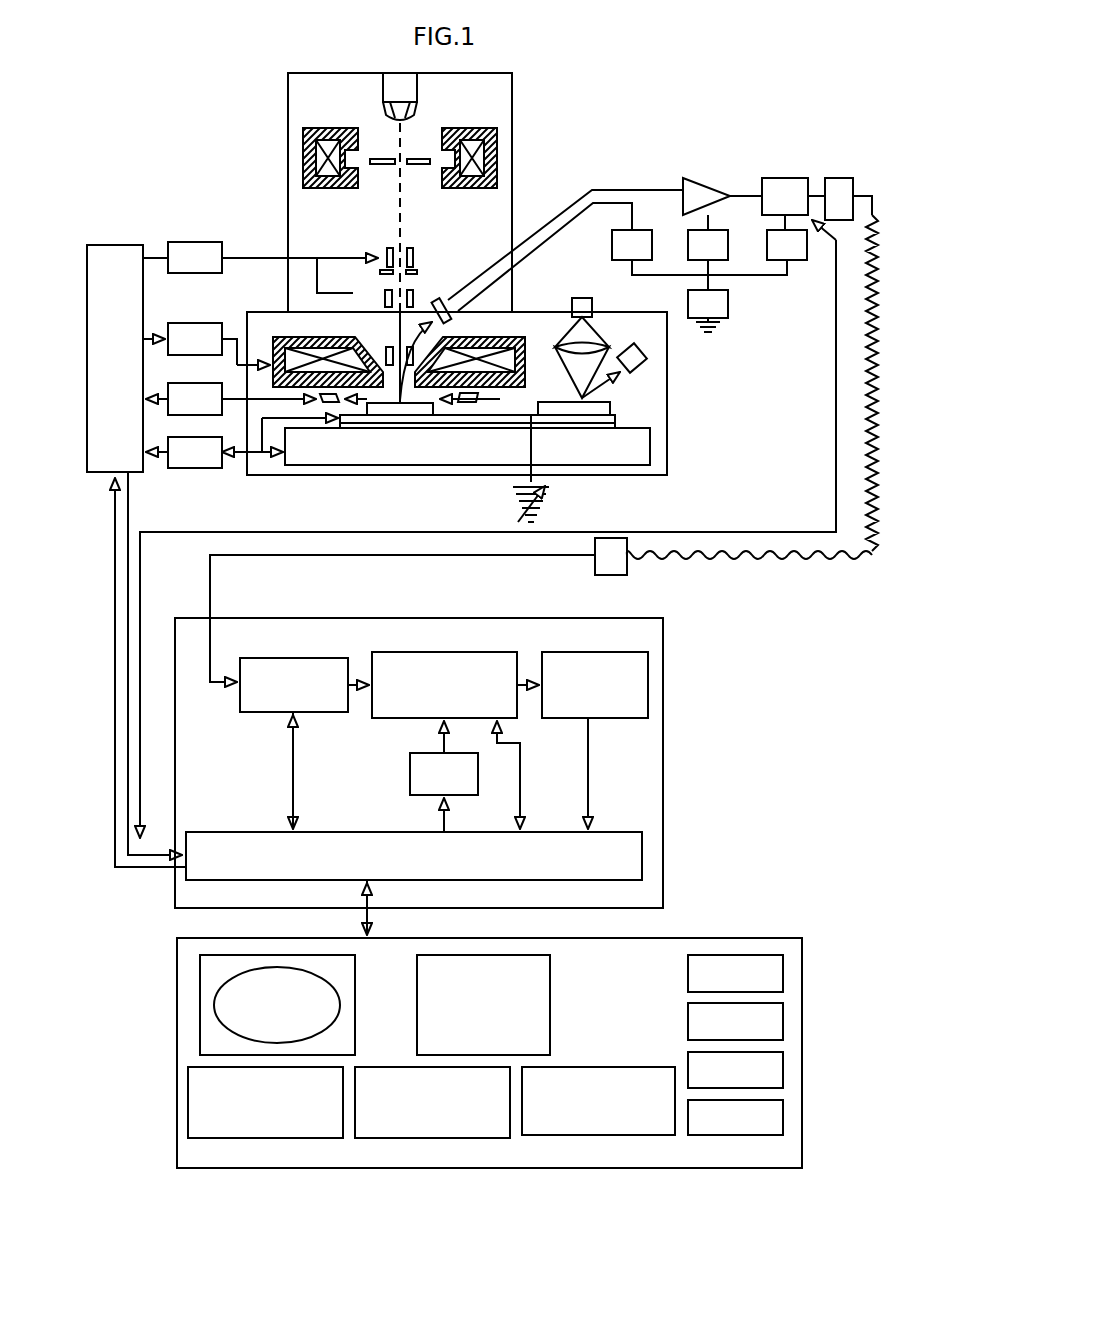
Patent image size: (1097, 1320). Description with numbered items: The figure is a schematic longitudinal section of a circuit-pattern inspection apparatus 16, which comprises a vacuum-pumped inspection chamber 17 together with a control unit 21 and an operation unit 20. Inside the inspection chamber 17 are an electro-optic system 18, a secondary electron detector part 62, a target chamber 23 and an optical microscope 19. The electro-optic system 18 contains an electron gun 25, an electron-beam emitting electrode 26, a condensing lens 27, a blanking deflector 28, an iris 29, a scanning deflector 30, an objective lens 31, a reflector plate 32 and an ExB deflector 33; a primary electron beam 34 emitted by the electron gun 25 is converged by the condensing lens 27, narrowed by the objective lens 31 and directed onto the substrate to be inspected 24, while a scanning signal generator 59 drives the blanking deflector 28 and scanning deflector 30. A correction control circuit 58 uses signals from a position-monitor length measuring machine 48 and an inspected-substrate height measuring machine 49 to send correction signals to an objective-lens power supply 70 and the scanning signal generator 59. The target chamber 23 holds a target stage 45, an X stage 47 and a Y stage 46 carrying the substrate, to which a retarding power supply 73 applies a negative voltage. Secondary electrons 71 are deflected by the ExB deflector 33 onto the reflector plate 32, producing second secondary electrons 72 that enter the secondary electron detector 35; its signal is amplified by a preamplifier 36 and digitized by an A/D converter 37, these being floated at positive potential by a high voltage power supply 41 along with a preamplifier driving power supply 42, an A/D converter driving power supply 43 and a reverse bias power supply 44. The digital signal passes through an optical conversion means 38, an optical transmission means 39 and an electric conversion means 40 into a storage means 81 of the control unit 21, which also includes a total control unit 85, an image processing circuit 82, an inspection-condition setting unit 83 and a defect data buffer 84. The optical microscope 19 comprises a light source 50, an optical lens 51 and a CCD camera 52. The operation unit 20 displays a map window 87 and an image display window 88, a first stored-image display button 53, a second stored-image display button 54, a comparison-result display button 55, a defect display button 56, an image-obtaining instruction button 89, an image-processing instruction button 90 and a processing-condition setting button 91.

The circuit-pattern inspection apparatus 16 is at (225, 143).
The inspection chamber 17 is at (288, 95).
The electro-optic system 18 is at (300, 222).
The optical microscope 19 is at (555, 305).
The operation unit 20 is at (802, 1043).
The control unit 21 is at (663, 714).
The target chamber 23 is at (258, 475).
The substrate to be inspected 24 is at (378, 408).
The electron gun 25 is at (417, 108).
The electron-beam emitting electrode 26 is at (380, 164).
The condensing lens 27 is at (345, 188).
The blanking deflector 28 is at (414, 255).
The iris 29 is at (420, 271).
The scanning deflector 30 is at (378, 288).
The objective lens 31 is at (275, 337).
The reflector plate 32 is at (380, 300).
The ExB deflector 33 is at (372, 337).
The primary electron beam 34 is at (405, 228).
The secondary electron detector 35 is at (450, 333).
The preamplifier 36 is at (688, 178).
The A/D converter 37 is at (775, 178).
The optical conversion means 38 is at (840, 178).
The optical transmission means 39 is at (740, 558).
The electric conversion means 40 is at (612, 575).
The high voltage power supply 41 is at (728, 305).
The preamplifier driving power supply 42 is at (728, 255).
The A/D converter driving power supply 43 is at (795, 260).
The reverse bias power supply 44 is at (630, 230).
The target stage 45 is at (307, 465).
The Y stage 46 is at (465, 428).
The X stage 47 is at (418, 423).
The position-monitor length measuring machine 48 is at (188, 468).
The inspected-substrate height measuring machine 49 is at (195, 383).
The light source 50 is at (592, 305).
The optical lens 51 is at (605, 340).
The CCD camera 52 is at (640, 366).
The first stored-image display button 53 is at (783, 970).
The second stored-image display button 54 is at (783, 1020).
The comparison-result display button 55 is at (783, 1073).
The defect display button 56 is at (783, 1115).
The correction control circuit 58 is at (112, 245).
The scanning signal generator 59 is at (185, 242).
The secondary electron detector part 62 is at (733, 165).
The objective-lens power supply 70 is at (190, 323).
The secondary electron 71 is at (395, 332).
The second secondary electron 72 is at (460, 298).
The retarding power supply 73 is at (555, 508).
The storage means 81 is at (240, 698).
The image processing circuit 82 is at (372, 698).
The inspection-condition setting unit 83 is at (410, 775).
The defect data buffer 84 is at (612, 718).
The total control unit 85 is at (232, 832).
The map window 87 is at (340, 998).
The image display window 88 is at (510, 1005).
The image-obtaining instruction button 89 is at (228, 1138).
The image-processing instruction button 90 is at (393, 1138).
The processing-condition setting button 91 is at (553, 1135).